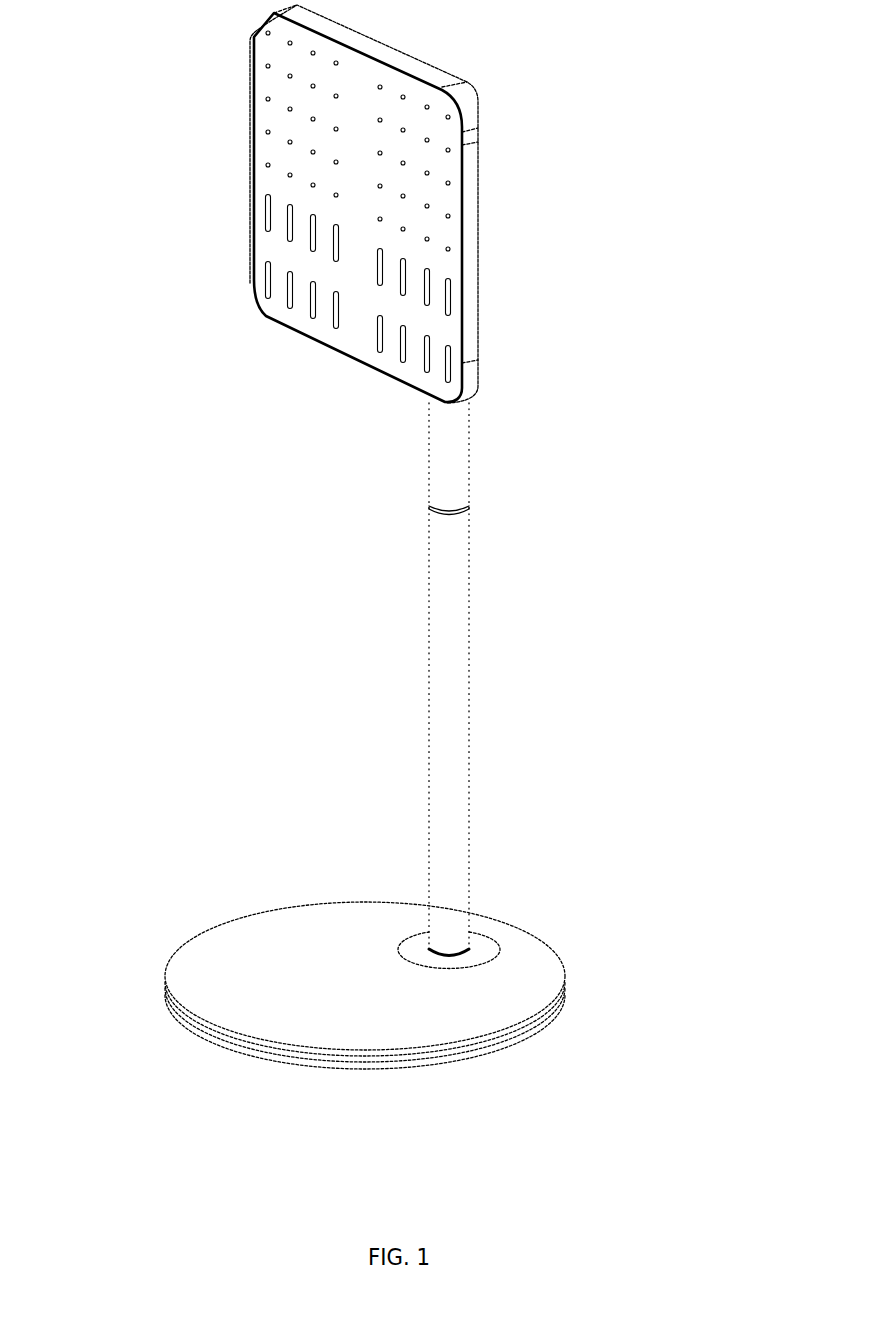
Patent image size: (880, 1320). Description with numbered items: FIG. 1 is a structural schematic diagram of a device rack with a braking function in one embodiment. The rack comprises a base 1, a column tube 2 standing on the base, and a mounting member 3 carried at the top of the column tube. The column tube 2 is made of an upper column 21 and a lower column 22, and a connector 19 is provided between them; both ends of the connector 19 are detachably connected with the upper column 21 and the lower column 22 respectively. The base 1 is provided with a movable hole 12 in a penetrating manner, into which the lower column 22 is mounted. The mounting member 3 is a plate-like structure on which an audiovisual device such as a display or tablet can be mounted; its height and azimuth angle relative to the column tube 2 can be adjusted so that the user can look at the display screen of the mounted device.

The base 1 is at (300, 1013).
The column tube 2 is at (597, 645).
The mounting member 3 is at (353, 215).
The movable hole 12 is at (470, 945).
The connector 19 is at (430, 508).
The upper column 21 is at (455, 453).
The lower column 22 is at (455, 633).